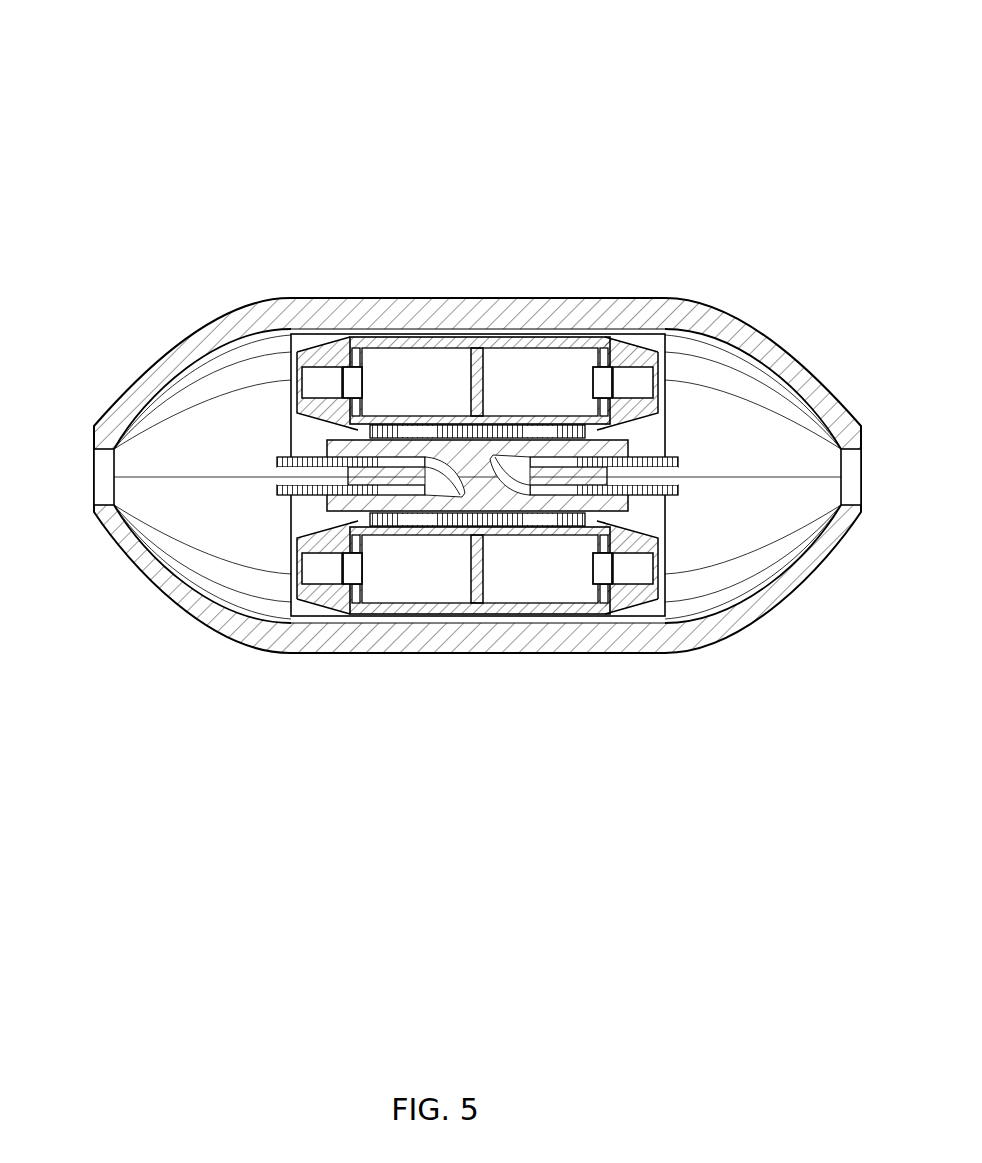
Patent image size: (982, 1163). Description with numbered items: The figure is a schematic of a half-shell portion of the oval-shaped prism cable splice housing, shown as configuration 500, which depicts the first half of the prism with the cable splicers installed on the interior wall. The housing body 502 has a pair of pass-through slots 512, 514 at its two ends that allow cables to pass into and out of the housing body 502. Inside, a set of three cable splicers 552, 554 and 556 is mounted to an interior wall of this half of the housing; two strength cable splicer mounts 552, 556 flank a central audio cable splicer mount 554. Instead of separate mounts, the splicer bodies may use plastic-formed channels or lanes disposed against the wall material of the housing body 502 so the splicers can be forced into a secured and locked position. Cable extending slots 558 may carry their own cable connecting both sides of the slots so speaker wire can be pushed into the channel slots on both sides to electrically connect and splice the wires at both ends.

The configuration 500 is at (81, 38).
The housing body 502 is at (307, 298).
The pass-through slot 512 is at (92, 523).
The pass-through slot 514 is at (858, 512).
The cable splicer 552 is at (590, 358).
The cable splicer 554 is at (510, 500).
The cable splicer 556 is at (387, 580).
The cable extending slots 558 is at (387, 487).